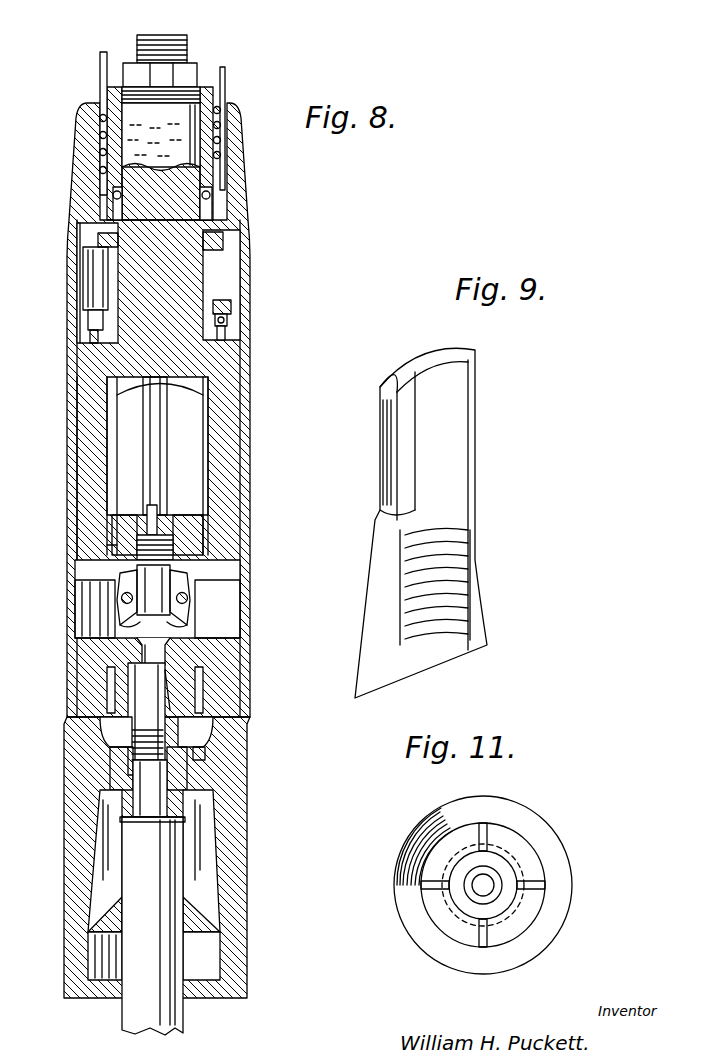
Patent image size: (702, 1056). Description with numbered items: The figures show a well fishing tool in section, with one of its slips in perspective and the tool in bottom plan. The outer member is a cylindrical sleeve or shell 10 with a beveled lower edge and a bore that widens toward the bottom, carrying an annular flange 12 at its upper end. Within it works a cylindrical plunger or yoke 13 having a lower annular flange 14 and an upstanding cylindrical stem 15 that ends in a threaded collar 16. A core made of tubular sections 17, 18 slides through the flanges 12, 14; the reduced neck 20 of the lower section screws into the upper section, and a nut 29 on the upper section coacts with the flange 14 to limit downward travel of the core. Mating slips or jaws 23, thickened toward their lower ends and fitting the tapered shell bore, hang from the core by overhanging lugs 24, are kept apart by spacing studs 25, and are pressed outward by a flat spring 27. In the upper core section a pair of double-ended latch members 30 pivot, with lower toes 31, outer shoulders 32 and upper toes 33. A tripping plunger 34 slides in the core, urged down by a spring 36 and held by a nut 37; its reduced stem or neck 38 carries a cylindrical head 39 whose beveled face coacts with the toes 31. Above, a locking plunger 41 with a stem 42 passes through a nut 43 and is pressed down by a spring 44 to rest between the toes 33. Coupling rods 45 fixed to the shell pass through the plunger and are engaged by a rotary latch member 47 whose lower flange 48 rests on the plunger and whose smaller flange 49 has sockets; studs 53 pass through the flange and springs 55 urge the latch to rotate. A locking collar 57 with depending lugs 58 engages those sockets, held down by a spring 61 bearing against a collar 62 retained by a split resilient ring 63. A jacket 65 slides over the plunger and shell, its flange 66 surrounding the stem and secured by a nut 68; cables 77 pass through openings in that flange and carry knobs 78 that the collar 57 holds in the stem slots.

In FIG. 8, the cylindrical sleeve or shell 10 is at (230, 883).
In FIG. 11, the cylindrical sleeve or shell 10 is at (537, 938).
In FIG. 8, the annular flange 12 is at (202, 675).
In FIG. 8, the cylindrical plunger or yoke 13 is at (228, 477).
In FIG. 8, the annular flange 14 is at (180, 597).
In FIG. 8, the cylindrical stem 15 is at (133, 272).
In FIG. 8, the threaded collar 16 is at (187, 92).
In FIG. 8, the tubular core section 17 is at (117, 762).
In FIG. 11, the tubular core section 17 is at (457, 853).
In FIG. 8, the tubular core section 18 is at (167, 650).
In FIG. 8, the reduced neck 20 is at (172, 695).
In FIG. 8, the slips or jaws 23 is at (203, 867).
In FIG. 9, the slips or jaws 23 is at (452, 485).
In FIG. 11, the slips or jaws 23 is at (530, 865).
In FIG. 8, the overhanging lugs 24 is at (187, 732).
In FIG. 9, the overhanging lugs 24 is at (450, 377).
In FIG. 8, the spacing studs 25 is at (200, 757).
In FIG. 11, the spacing studs 25 is at (530, 887).
In FIG. 8, the flat spring 27 is at (195, 782).
In FIG. 8, the nut 29 is at (193, 532).
In FIG. 8, the double-ended latch members 30 is at (182, 610).
In FIG. 8, the toes 31 is at (115, 627).
In FIG. 8, the shoulders 32 is at (142, 615).
In FIG. 8, the toes 33 is at (200, 567).
In FIG. 8, the tripping plunger 34 is at (150, 695).
In FIG. 11, the tripping plunger 34 is at (483, 885).
In FIG. 8, the spring 36 is at (132, 730).
In FIG. 8, the nut 37 is at (140, 825).
In FIG. 11, the nut 37 is at (477, 897).
In FIG. 8, the reduced stem or neck 38 is at (157, 642).
In FIG. 8, the cylindrical head 39 is at (147, 607).
In FIG. 8, the locking plunger 41 is at (117, 587).
In FIG. 8, the stem 42 is at (155, 528).
In FIG. 8, the nut 43 is at (140, 515).
In FIG. 8, the spring 44 is at (117, 547).
In FIG. 8, the coupling rods 45 is at (163, 442).
In FIG. 8, the rotary latch member 47 is at (203, 285).
In FIG. 8, the flange 48 is at (233, 335).
In FIG. 8, the flange 49 is at (223, 240).
In FIG. 8, the studs 53 is at (230, 323).
In FIG. 8, the springs 55 is at (232, 305).
In FIG. 8, the locking collar 57 is at (217, 208).
In FIG. 8, the depending lugs 58 is at (110, 243).
In FIG. 8, the spring 61 is at (100, 150).
In FIG. 8, the collar 62 is at (218, 122).
In FIG. 8, the split resilient ring 63 is at (227, 112).
In FIG. 8, the jacket 65 is at (240, 433).
In FIG. 8, the flange 66 is at (220, 100).
In FIG. 8, the nut 68 is at (207, 83).
In FIG. 8, the cables or flexible elements 77 is at (227, 140).
In FIG. 8, the knobs 78 is at (222, 175).